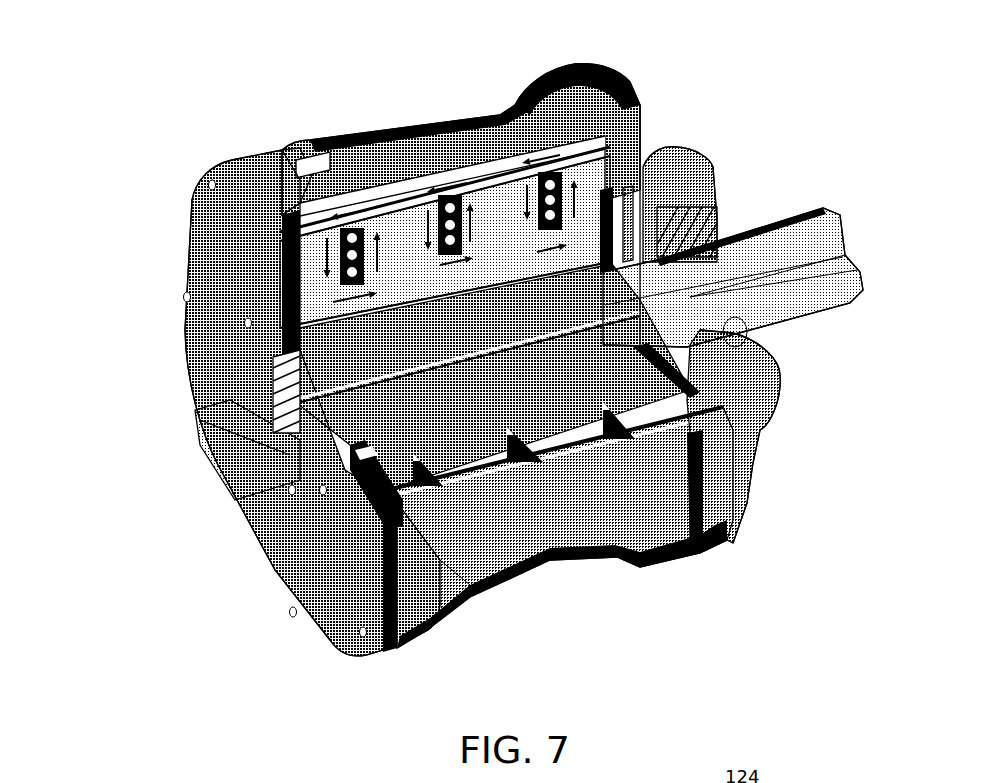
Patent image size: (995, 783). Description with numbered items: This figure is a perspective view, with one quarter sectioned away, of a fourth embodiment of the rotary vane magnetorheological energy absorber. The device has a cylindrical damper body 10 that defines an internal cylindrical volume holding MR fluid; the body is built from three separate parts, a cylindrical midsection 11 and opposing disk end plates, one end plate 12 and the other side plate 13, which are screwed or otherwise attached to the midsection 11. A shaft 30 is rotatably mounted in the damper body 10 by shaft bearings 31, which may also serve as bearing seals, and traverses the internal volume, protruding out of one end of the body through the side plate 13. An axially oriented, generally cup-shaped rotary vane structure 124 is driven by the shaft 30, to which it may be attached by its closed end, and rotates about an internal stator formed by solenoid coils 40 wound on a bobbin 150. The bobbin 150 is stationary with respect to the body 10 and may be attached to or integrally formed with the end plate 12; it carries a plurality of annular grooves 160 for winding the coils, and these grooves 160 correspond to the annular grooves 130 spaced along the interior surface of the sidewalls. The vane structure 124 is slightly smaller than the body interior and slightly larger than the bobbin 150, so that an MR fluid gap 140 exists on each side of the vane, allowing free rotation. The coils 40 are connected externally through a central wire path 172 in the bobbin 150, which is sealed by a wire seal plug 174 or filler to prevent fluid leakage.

The cylindrical damper body 10 is at (428, 135).
The cylindrical midsection 11 is at (370, 158).
The end plate 12 is at (198, 210).
The disk end plate 13 is at (782, 383).
The shaft 30 is at (770, 222).
The shaft bearings 31 is at (280, 362).
The solenoid coils 40 is at (548, 218).
The rotary vane structure 124 is at (478, 125).
The annular grooves 130 is at (622, 86).
The MR fluid gap 140 is at (270, 150).
The bobbin 150 is at (745, 525).
The annular grooves 160 is at (600, 556).
The central wire path 172 is at (290, 605).
The wire seal plug 174 is at (190, 312).